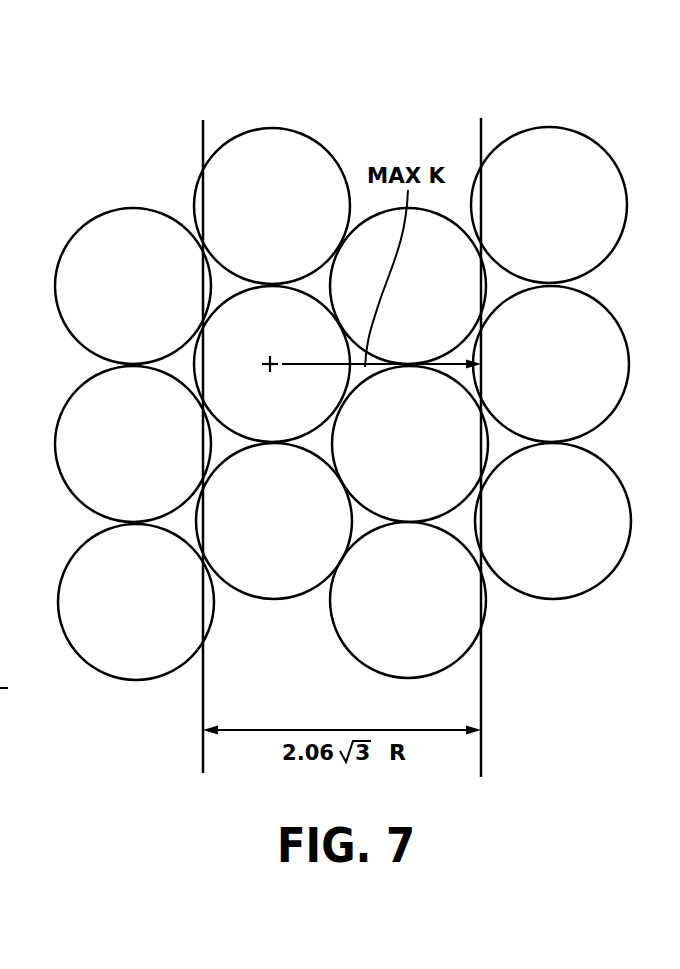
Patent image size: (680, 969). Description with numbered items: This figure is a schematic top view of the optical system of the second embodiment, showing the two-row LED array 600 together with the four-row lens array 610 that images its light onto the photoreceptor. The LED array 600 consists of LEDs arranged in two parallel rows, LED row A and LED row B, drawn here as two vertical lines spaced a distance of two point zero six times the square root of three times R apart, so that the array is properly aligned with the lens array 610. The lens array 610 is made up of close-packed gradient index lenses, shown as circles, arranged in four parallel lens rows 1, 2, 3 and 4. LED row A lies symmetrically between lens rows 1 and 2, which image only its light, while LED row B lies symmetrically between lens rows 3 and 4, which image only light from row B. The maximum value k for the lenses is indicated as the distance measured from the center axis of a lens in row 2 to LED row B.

The two-row LED array 600 is at (420, 73).
The four-row lens array 610 is at (610, 306).
The lens row 1 is at (134, 463).
The lens row 2 is at (273, 381).
The lens row 3 is at (409, 460).
The lens row 4 is at (571, 382).